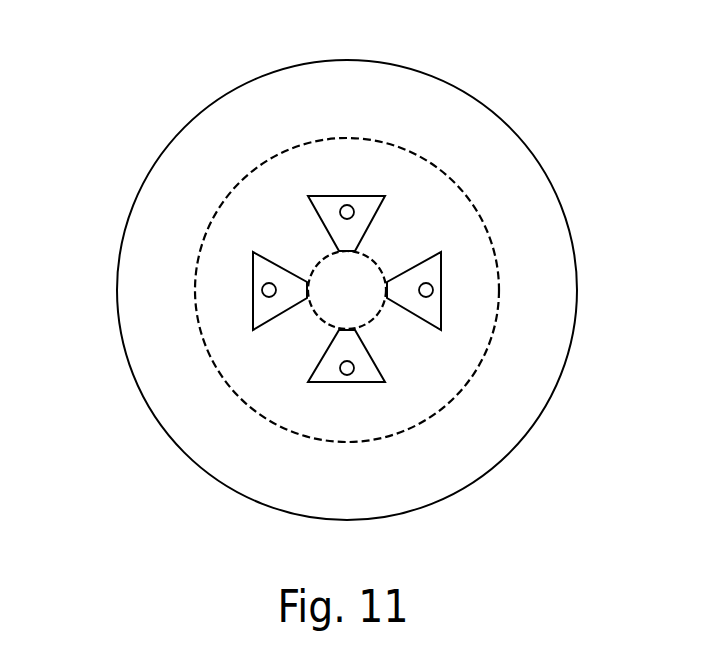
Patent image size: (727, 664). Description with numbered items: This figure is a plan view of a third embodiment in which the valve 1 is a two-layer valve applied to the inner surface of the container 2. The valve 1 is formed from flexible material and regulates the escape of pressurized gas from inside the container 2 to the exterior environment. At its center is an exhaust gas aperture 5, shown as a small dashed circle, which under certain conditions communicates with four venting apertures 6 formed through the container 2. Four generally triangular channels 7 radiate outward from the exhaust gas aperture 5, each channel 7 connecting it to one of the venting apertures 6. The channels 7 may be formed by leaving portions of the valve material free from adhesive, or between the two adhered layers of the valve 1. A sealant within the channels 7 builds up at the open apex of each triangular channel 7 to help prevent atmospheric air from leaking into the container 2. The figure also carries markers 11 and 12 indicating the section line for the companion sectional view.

The valve 1 is at (408, 167).
The container 2 is at (162, 159).
The exhaust gas aperture 5 is at (328, 298).
The venting aperture 6 is at (426, 297).
The channel 7 is at (332, 215).
The inner region 11 is at (437, 203).
The section line 12 is at (110, 291).